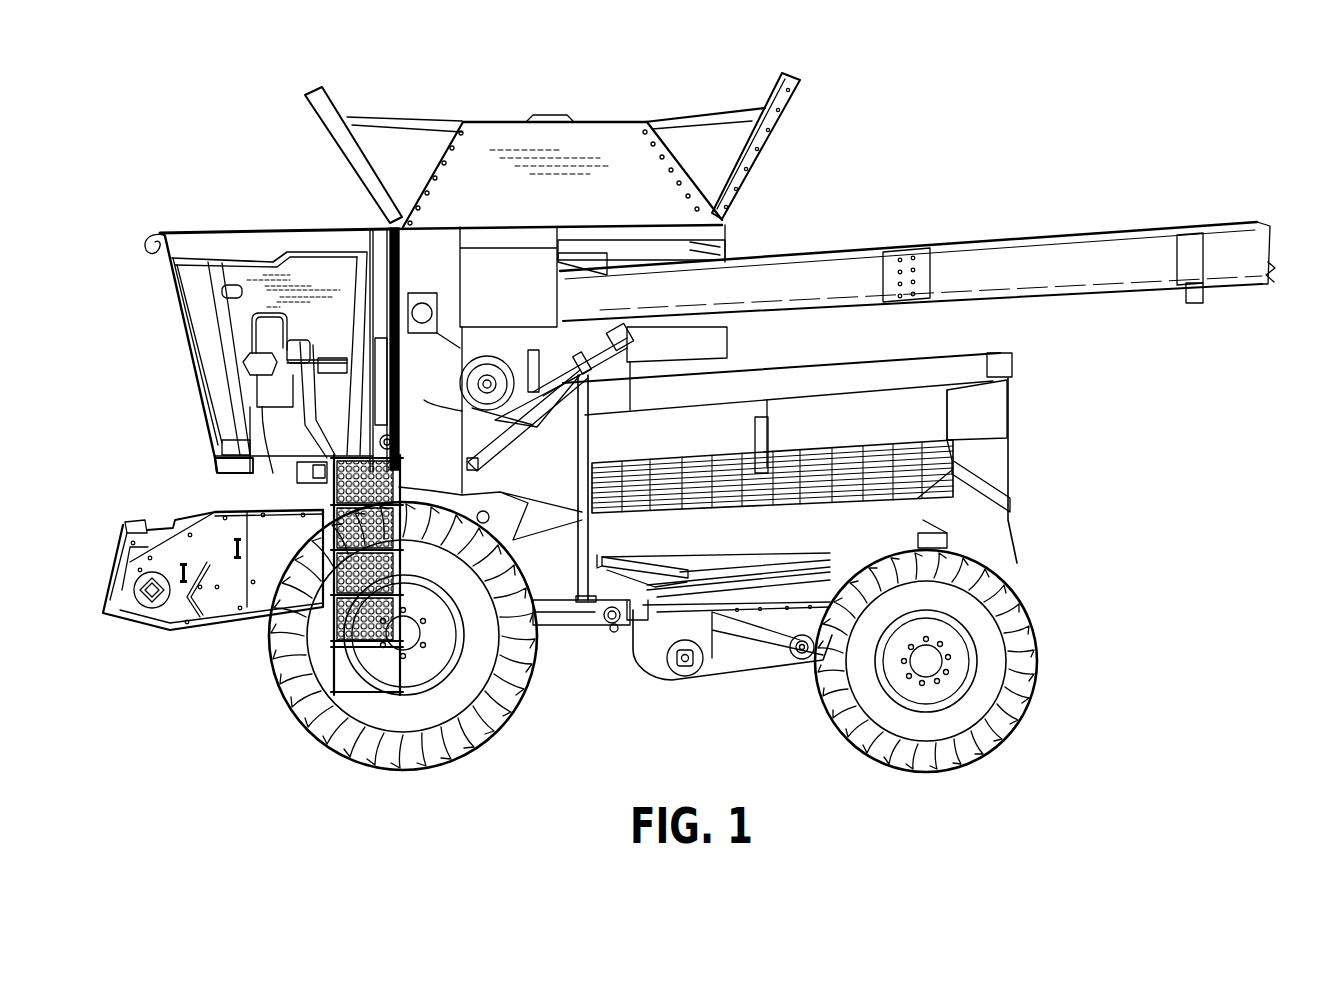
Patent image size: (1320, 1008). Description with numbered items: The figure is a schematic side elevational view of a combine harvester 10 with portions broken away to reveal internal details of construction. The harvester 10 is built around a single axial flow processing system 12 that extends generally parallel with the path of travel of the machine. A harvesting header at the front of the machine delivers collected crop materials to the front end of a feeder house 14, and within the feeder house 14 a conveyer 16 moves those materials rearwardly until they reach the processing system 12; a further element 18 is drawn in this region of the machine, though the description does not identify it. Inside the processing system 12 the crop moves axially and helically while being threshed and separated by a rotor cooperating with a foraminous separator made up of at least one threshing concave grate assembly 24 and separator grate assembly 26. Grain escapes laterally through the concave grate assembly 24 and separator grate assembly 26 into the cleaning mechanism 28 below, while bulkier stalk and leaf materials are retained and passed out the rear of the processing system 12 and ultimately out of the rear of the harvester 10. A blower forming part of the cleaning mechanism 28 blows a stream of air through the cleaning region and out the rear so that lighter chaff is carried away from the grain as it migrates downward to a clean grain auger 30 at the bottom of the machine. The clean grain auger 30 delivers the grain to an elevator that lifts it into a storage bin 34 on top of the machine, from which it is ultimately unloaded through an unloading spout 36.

The combine harvester 10 is at (840, 200).
The axial flow processing system 12 is at (758, 358).
The feeder house 14 is at (127, 520).
The conveyer 16 is at (424, 400).
The pulley 18 is at (500, 357).
The threshing concave grate assembly 24 is at (700, 514).
The separator grate assembly 26 is at (908, 497).
The cleaning mechanism 28 is at (795, 552).
The clean grain auger 30 is at (692, 680).
The storage bin 34 is at (783, 116).
The unloading spout 36 is at (1077, 237).